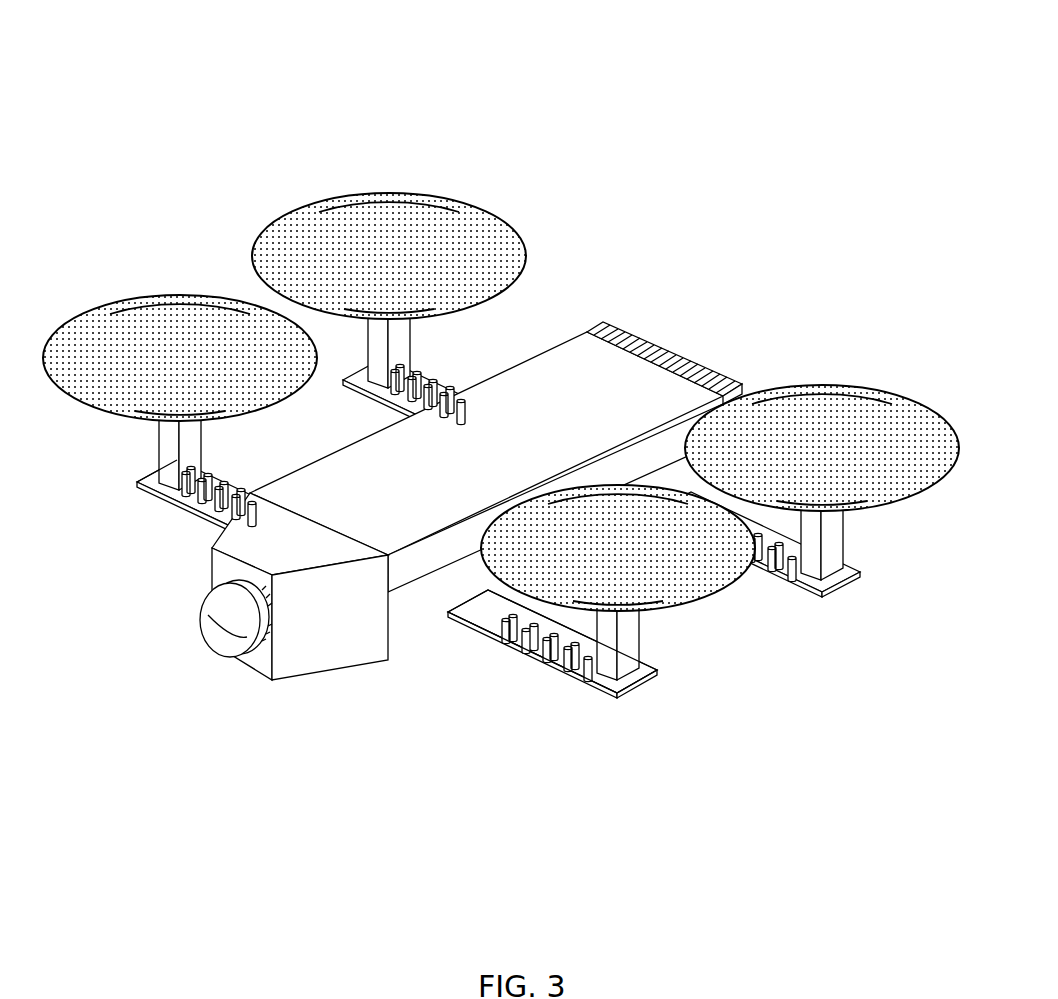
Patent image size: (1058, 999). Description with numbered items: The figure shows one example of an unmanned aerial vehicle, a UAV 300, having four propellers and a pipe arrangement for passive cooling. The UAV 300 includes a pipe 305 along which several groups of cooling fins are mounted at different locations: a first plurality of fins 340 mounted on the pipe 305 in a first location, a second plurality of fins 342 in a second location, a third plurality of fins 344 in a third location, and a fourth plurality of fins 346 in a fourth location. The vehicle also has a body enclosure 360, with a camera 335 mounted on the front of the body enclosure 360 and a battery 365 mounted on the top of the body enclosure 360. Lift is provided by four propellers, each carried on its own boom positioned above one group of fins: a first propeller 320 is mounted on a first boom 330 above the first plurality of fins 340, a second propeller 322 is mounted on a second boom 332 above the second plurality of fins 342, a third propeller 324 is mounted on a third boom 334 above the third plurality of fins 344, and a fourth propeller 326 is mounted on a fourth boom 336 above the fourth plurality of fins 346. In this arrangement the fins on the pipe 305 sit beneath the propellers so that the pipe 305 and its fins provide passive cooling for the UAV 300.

The UAV 300 is at (750, 86).
The pipe 305 is at (472, 635).
The first propeller 320 is at (678, 613).
The second propeller 322 is at (165, 295).
The third propeller 324 is at (399, 192).
The fourth propeller 326 is at (838, 388).
The first boom 330 is at (630, 690).
The second boom 332 is at (138, 487).
The third boom 334 is at (368, 390).
The fourth boom 336 is at (848, 578).
The camera 335 is at (233, 645).
The first plurality of fins 340 is at (536, 655).
The second plurality of fins 342 is at (228, 467).
The third plurality of fins 344 is at (432, 370).
The fourth plurality of fins 346 is at (776, 588).
The body enclosure 360 is at (477, 504).
The battery 365 is at (572, 350).